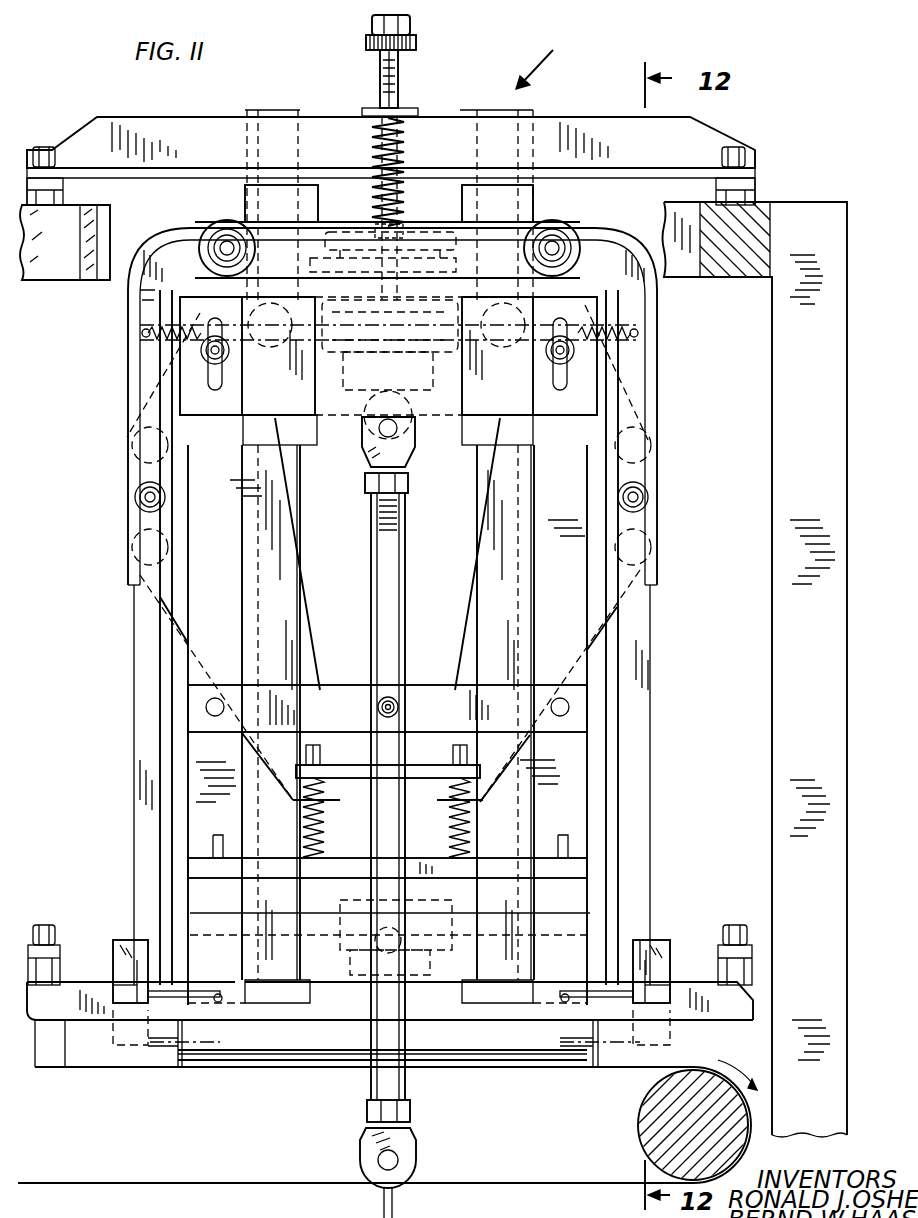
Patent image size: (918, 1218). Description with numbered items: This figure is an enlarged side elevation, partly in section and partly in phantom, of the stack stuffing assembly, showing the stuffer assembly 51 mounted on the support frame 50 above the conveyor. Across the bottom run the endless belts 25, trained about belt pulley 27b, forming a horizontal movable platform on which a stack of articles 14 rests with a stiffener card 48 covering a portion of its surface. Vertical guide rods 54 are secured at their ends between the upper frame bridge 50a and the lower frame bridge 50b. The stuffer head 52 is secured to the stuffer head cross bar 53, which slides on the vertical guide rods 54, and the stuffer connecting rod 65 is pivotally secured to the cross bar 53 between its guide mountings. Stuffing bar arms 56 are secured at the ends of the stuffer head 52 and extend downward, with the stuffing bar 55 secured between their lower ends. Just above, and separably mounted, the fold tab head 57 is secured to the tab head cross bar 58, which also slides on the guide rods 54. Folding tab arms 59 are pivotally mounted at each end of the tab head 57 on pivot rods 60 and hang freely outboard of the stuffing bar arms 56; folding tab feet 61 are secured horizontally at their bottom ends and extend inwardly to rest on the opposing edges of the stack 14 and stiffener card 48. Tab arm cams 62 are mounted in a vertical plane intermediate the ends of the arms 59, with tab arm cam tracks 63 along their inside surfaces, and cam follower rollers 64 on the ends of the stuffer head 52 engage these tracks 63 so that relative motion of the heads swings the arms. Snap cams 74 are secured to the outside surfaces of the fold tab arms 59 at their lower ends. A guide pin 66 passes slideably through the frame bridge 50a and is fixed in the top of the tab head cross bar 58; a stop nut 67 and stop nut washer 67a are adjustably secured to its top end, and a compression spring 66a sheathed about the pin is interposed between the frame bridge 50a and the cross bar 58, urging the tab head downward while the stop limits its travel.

The stack of articles 14 is at (460, 1069).
The endless belts 25 is at (745, 1140).
The belt pulley 27b is at (640, 1125).
The stiffener card 48 is at (510, 1052).
The support frame 50 is at (48, 272).
The frame bridge 50a is at (600, 128).
The frame bridge 50b is at (40, 1022).
The stuffer assembly 51 is at (547, 60).
The stuffer head 52 is at (580, 388).
The stuffer head cross bar 53 is at (414, 428).
The vertical guide rods 54 is at (300, 470).
The stuffing bar 55 is at (587, 868).
The stuffing bar arms 56 is at (197, 830).
The fold tab head 57 is at (432, 228).
The tab head cross bar 58 is at (345, 240).
The folding tab arms 59 is at (648, 600).
The pivot rods 60 is at (225, 232).
The folding tab feet 61 is at (212, 990).
The tab arm cams 62 is at (284, 640).
The tab arm cam tracks 63 is at (306, 576).
The cam follower rollers 64 is at (278, 298).
The stuffer connecting rod 65 is at (428, 560).
The guide pin 66 is at (398, 88).
The compression spring 66a is at (383, 170).
The stop nut 67 is at (412, 24).
The stop nut washer 67a is at (368, 46).
The snap cams 74 is at (120, 945).